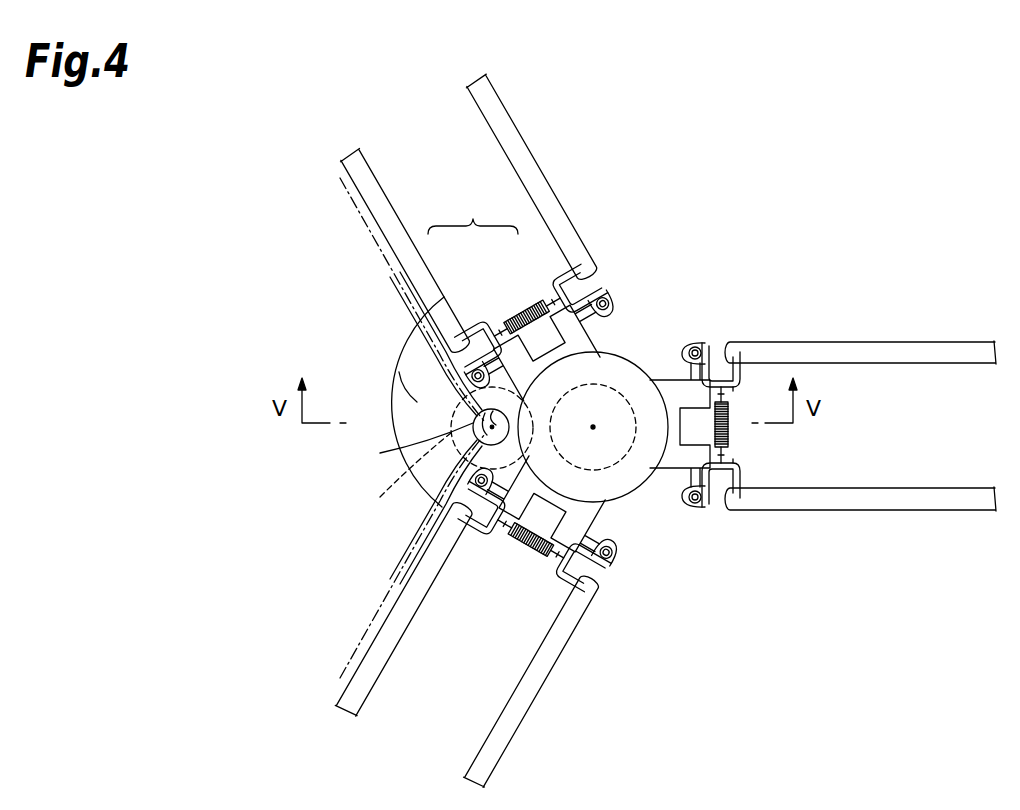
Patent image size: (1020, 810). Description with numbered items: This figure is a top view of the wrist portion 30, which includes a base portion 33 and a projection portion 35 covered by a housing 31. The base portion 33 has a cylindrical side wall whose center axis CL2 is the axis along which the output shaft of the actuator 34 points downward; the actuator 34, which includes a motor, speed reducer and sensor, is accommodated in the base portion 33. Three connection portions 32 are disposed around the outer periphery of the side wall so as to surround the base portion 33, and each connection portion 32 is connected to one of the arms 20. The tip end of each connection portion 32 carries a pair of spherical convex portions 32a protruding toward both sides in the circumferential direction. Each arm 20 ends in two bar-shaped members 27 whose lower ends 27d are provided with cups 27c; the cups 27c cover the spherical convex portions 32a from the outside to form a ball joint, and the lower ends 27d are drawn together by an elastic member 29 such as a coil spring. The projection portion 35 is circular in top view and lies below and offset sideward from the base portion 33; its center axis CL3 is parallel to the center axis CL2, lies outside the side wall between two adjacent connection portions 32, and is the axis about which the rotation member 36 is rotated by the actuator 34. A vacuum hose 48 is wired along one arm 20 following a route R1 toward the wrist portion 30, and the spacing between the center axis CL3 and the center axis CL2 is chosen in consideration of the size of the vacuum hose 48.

The arm 20 is at (324, 203).
The bar-shaped member 27 is at (372, 200).
The cup 27c is at (692, 339).
The lower end 27d is at (722, 340).
The elastic member 29 is at (737, 442).
The wrist portion 30 is at (689, 257).
The housing 31 is at (473, 214).
The connection portion 32 is at (623, 328).
The spherical convex portion 32a is at (668, 342).
The base portion 33 is at (528, 317).
The actuator 34 is at (548, 480).
The projection portion 35 is at (412, 338).
The rotation member 36 is at (415, 475).
The vacuum hose 48 is at (397, 295).
The center axis CL2 is at (593, 427).
The center axis CL3 is at (480, 432).
The route R1 is at (385, 263).